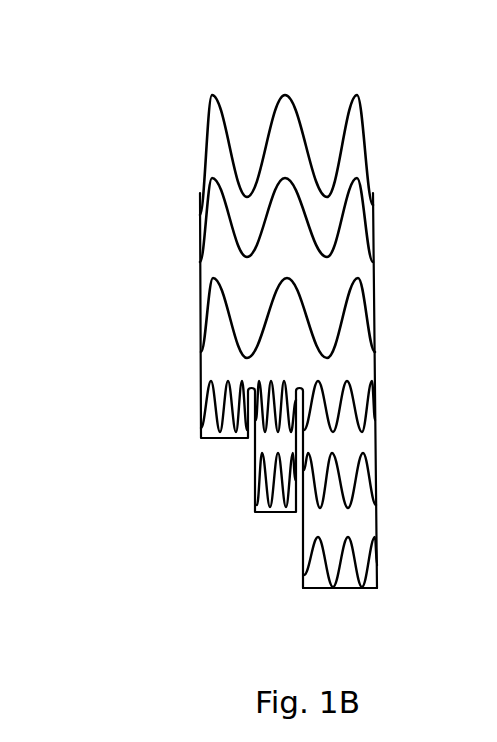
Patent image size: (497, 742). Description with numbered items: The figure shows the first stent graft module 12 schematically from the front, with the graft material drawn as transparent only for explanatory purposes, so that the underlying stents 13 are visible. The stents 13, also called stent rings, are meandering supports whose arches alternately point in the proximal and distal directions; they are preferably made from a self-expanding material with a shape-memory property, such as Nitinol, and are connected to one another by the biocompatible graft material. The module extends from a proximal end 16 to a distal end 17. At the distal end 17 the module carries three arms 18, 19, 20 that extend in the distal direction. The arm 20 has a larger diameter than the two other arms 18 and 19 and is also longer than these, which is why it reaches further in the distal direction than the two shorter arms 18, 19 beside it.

The first stent graft module 12 is at (209, 357).
The stent 13 is at (373, 197).
The proximal end 16 is at (262, 120).
The distal end 17 is at (376, 602).
The arm 18 is at (201, 412).
The arm 19 is at (255, 483).
The arm 20 is at (377, 515).